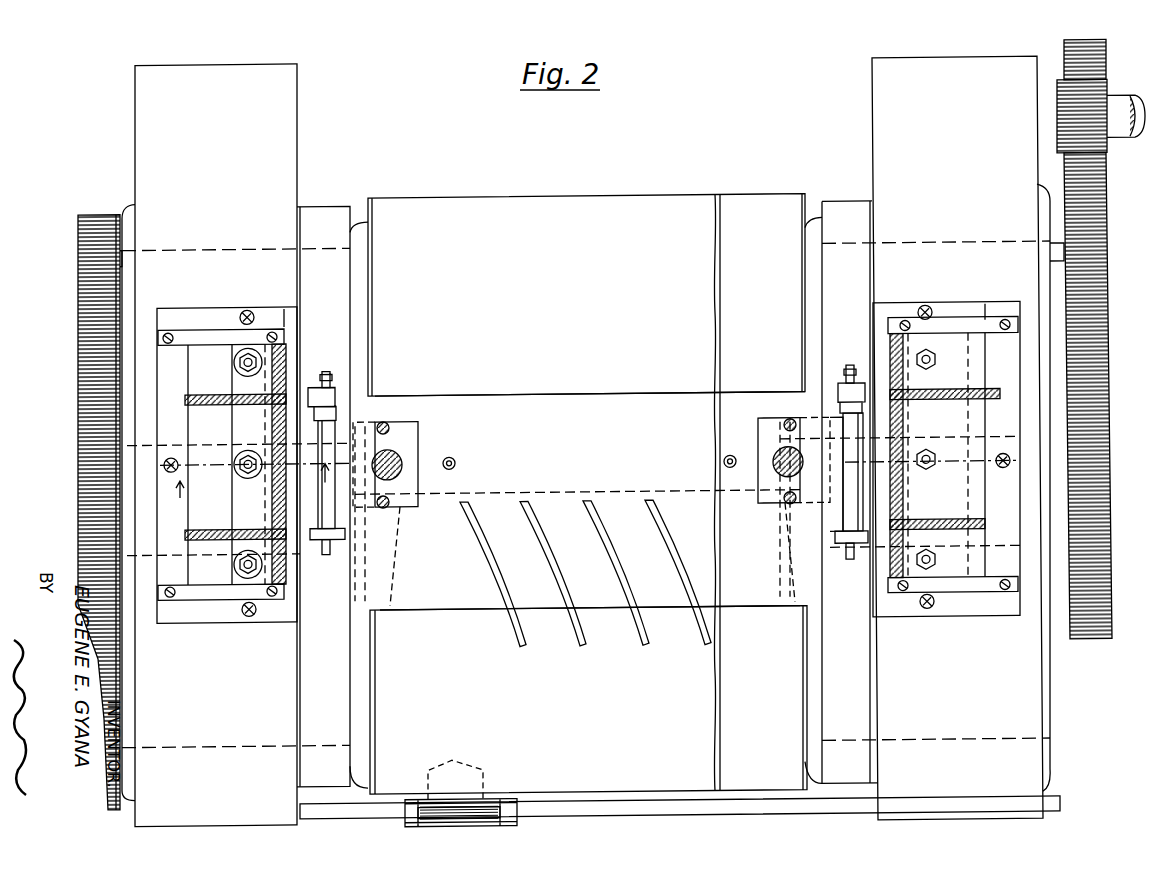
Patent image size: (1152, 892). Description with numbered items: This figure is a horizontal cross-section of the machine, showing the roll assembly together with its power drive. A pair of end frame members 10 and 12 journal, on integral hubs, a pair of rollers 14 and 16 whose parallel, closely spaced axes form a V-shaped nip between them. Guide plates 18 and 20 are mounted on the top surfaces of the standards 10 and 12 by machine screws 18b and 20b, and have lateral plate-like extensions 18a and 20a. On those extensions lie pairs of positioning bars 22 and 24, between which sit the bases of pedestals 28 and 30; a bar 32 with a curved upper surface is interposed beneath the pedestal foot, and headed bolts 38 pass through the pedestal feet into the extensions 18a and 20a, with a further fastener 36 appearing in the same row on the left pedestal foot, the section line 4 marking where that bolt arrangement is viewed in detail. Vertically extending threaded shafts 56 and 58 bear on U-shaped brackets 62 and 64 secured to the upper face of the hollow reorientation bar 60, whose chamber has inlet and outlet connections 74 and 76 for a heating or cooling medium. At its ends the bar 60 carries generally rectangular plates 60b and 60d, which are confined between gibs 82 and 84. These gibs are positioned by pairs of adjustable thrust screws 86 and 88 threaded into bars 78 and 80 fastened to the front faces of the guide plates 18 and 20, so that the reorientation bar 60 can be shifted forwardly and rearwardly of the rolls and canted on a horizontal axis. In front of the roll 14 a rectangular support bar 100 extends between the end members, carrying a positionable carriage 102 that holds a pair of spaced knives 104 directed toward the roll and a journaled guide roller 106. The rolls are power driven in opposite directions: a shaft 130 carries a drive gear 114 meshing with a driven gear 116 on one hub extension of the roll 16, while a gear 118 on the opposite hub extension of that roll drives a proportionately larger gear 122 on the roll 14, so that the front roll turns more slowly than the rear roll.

The section line of Fig. 4 is at (251, 492).
The end frame member 10 is at (225, 202).
The end frame member 12 is at (957, 180).
The roller 14 is at (552, 697).
The roller 16 is at (549, 284).
The guide plate 18 is at (305, 497).
The plate-like extension 18a is at (282, 318).
The machine screw 18b is at (246, 312).
The guide plate 20 is at (870, 530).
The plate-like extension 20a is at (982, 320).
The machine screw 20b is at (924, 315).
The positioning bars 22 is at (190, 334).
The positioning bars 24 is at (990, 325).
The pedestal 28 is at (288, 372).
The pedestal 30 is at (873, 352).
The bar 32 is at (235, 369).
The middle bolt 36 is at (245, 481).
The headed bolt 38 is at (235, 569).
The threaded shaft 56 is at (392, 460).
The threaded shaft 58 is at (780, 462).
The reorientation bar 60 is at (555, 402).
The rectangular plate 60b is at (320, 452).
The rectangular plate 60d is at (865, 445).
The U-shaped bracket 62 is at (398, 455).
The U-shaped bracket 64 is at (765, 427).
The inlet connection 74 is at (458, 464).
The outlet connection 76 is at (722, 466).
The bar 78 is at (338, 396).
The bar 80 is at (846, 384).
The gib 82 is at (360, 422).
The gib 84 is at (838, 412).
The adjustable thrust screw 86 is at (330, 378).
The adjustable thrust screw 88 is at (856, 378).
The support bar 100 is at (618, 807).
The carriage 102 is at (488, 810).
The knives 104 is at (472, 770).
The guide roller 106 is at (412, 820).
The drive gear 114 is at (1060, 128).
The driven gear 116 is at (1068, 225).
The gear 118 is at (80, 374).
The gear 122 is at (85, 492).
The shaft 130 is at (1120, 104).